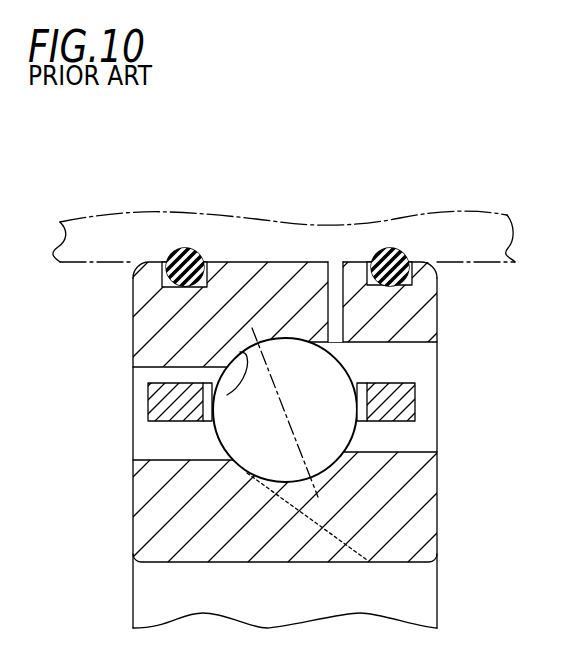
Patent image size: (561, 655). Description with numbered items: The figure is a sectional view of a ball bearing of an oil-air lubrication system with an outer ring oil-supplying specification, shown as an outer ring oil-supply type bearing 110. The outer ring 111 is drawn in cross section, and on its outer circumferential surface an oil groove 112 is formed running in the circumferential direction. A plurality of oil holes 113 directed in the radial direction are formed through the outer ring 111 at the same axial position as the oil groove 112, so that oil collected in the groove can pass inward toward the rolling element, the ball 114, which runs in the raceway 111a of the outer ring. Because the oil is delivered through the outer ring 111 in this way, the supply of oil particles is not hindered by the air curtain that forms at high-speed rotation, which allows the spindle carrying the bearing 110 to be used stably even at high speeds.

The outer ring oil-supply type bearing 110 is at (408, 178).
The outer ring 111 is at (168, 331).
The outer ring raceway groove 111a is at (227, 395).
The oil groove 112 is at (333, 261).
The oil holes 113 is at (336, 317).
The ball 114 is at (313, 386).